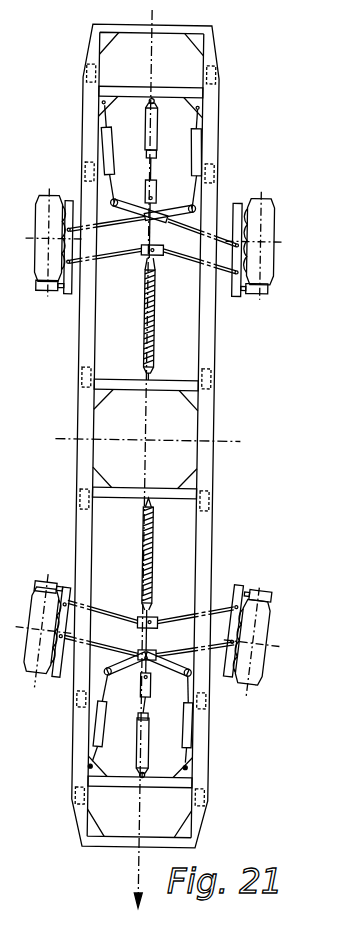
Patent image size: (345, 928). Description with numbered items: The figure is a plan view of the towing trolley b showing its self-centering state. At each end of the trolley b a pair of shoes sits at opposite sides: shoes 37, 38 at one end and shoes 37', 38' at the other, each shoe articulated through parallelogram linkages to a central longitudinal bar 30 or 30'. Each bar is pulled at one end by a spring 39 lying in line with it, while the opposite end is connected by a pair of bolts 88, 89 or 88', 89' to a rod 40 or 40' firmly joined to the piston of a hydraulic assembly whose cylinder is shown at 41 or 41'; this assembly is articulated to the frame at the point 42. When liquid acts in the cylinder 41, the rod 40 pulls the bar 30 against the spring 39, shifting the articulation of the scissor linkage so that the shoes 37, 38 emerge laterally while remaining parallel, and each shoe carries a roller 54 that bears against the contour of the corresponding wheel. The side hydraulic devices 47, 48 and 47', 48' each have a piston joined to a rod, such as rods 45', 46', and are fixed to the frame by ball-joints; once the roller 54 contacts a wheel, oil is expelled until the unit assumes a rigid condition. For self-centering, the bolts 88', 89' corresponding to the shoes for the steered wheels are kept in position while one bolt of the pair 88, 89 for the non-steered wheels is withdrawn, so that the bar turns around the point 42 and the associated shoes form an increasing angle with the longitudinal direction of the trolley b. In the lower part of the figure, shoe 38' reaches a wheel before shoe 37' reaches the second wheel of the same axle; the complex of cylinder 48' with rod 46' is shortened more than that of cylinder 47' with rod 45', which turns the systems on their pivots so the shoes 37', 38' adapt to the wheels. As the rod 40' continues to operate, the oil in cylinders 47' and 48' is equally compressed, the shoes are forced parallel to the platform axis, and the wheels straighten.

The trolley b is at (206, 411).
The central longitudinal bar 30 is at (141, 231).
The central longitudinal bar (rear) 30' is at (134, 641).
The shoe 37 is at (255, 235).
The shoe 38 is at (54, 230).
The shoe (rear, for steered wheels) 37' is at (253, 648).
The shoe (rear, for steered wheels) 38' is at (44, 647).
The spring 39 is at (156, 331).
The rod 40 is at (136, 169).
The rod (rear) 40' is at (127, 703).
The cylinder of hydraulic assembly 41 is at (163, 111).
The cylinder of hydraulic assembly (rear) 41' is at (127, 742).
The articulation point 42 is at (144, 99).
The rod (rear) 45' is at (126, 673).
The rod (rear) 46' is at (192, 689).
The hydraulic device 47 is at (80, 151).
The hydraulic device 48 is at (222, 157).
The hydraulic device (rear) 47' is at (69, 720).
The hydraulic device (rear) 48' is at (217, 723).
The roller 54 is at (266, 294).
The bolt 88 is at (163, 179).
The bolt (rear) 88' is at (158, 704).
The bolt 89 is at (168, 192).
The bolt (rear) 89' is at (163, 687).